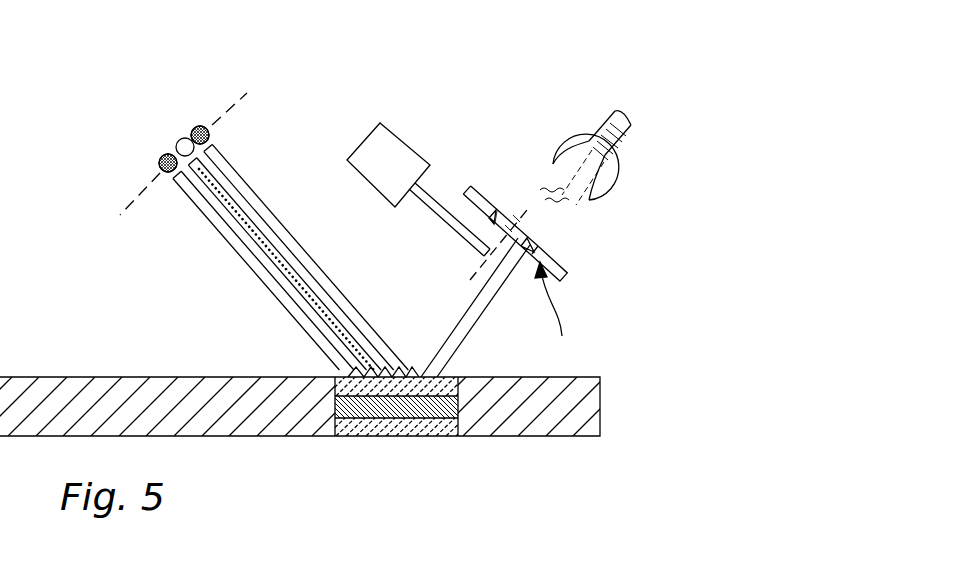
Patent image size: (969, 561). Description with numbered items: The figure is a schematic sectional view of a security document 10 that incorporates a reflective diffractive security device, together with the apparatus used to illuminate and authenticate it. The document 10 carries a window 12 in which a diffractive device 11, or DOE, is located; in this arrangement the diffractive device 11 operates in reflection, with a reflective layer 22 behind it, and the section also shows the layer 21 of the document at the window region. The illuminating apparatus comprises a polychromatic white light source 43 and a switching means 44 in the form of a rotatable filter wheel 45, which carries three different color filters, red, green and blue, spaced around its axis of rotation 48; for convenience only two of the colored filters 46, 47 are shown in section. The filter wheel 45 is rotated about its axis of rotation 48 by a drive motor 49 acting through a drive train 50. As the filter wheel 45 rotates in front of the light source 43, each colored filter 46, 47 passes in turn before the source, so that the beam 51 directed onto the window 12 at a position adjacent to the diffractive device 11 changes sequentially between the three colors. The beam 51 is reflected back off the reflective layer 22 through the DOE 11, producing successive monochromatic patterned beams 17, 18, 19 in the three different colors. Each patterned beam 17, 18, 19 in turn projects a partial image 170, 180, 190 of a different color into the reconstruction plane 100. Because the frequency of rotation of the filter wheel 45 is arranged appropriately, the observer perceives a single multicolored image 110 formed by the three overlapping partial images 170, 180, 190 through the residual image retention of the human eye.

The security document 10 is at (58, 400).
The diffractive device 11 is at (418, 372).
The window 12 is at (415, 427).
The monochromatic patterned beam 17 is at (276, 284).
The monochromatic patterned beam 18 is at (258, 233).
The monochromatic patterned beam 19 is at (272, 207).
The upper layer 21 is at (347, 393).
The reflective layer 22 is at (352, 412).
The polychromatic light source 43 is at (532, 180).
The switching means 44 is at (562, 305).
The filter wheel 45 is at (560, 272).
The colored filter 46 is at (545, 235).
The colored filter 47 is at (495, 203).
The axis of rotation 48 is at (470, 280).
The drive motor 49 is at (387, 145).
The drive train 50 is at (440, 218).
The monochromatic beam of light 51 is at (468, 335).
The reconstruction plane 100 is at (120, 210).
The multicolored image 110 is at (220, 132).
The projected partial image 170 is at (159, 163).
The projected partial image 180 is at (178, 142).
The projected partial image 190 is at (200, 126).